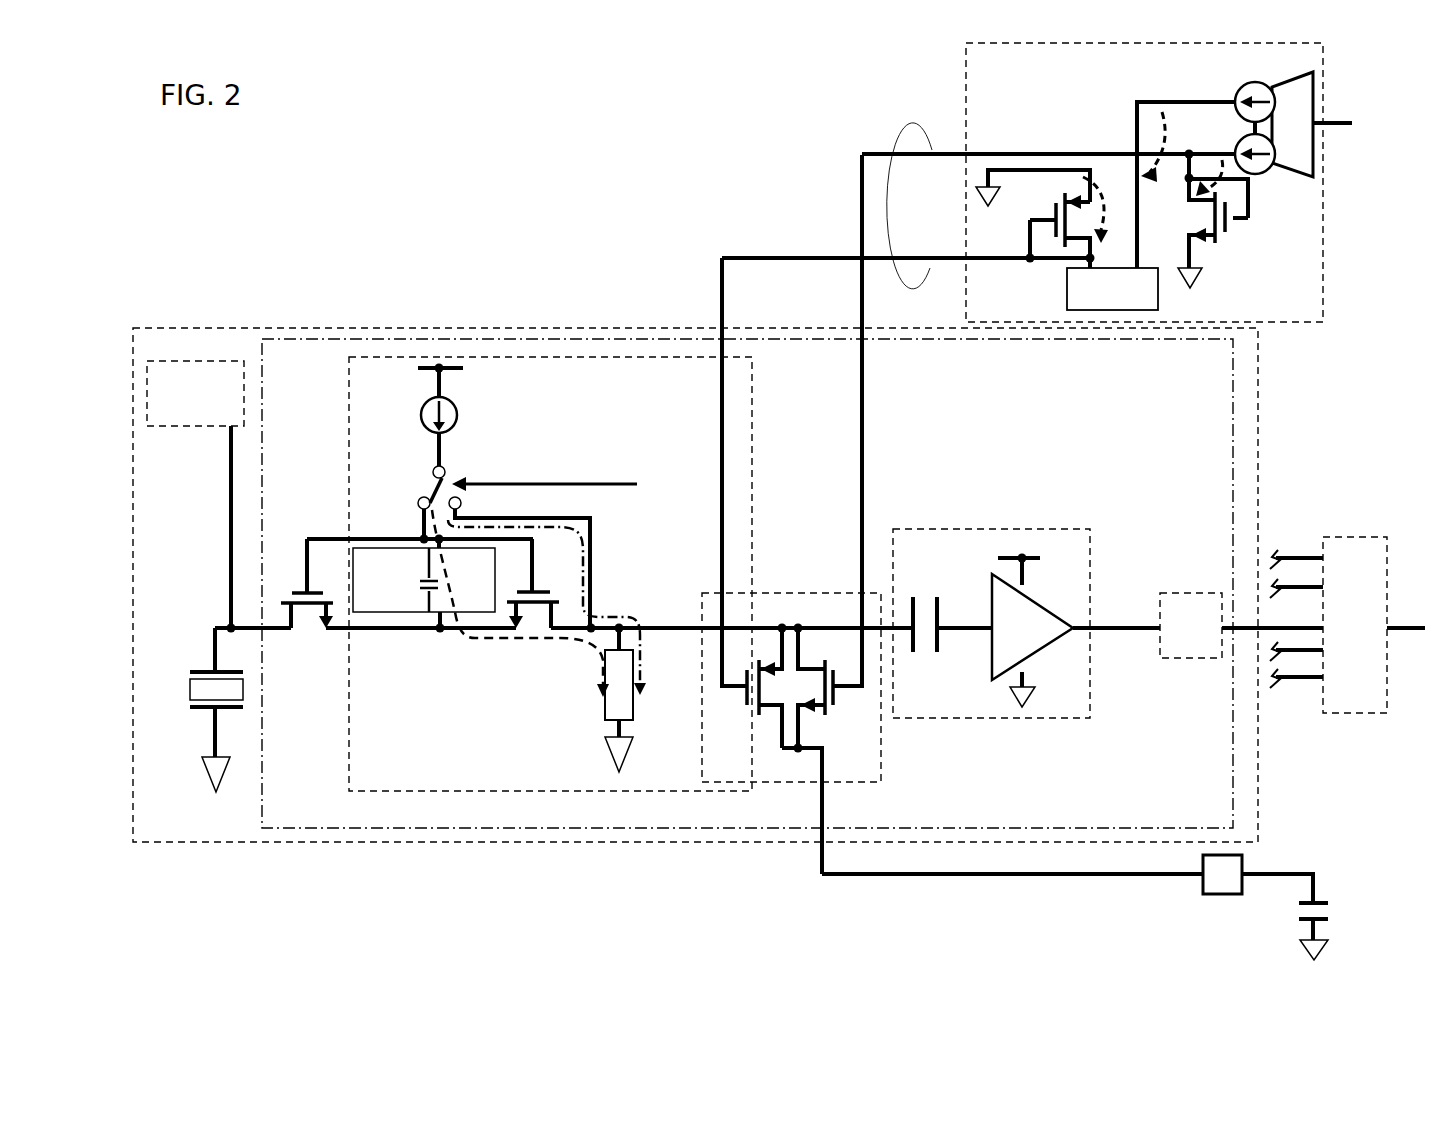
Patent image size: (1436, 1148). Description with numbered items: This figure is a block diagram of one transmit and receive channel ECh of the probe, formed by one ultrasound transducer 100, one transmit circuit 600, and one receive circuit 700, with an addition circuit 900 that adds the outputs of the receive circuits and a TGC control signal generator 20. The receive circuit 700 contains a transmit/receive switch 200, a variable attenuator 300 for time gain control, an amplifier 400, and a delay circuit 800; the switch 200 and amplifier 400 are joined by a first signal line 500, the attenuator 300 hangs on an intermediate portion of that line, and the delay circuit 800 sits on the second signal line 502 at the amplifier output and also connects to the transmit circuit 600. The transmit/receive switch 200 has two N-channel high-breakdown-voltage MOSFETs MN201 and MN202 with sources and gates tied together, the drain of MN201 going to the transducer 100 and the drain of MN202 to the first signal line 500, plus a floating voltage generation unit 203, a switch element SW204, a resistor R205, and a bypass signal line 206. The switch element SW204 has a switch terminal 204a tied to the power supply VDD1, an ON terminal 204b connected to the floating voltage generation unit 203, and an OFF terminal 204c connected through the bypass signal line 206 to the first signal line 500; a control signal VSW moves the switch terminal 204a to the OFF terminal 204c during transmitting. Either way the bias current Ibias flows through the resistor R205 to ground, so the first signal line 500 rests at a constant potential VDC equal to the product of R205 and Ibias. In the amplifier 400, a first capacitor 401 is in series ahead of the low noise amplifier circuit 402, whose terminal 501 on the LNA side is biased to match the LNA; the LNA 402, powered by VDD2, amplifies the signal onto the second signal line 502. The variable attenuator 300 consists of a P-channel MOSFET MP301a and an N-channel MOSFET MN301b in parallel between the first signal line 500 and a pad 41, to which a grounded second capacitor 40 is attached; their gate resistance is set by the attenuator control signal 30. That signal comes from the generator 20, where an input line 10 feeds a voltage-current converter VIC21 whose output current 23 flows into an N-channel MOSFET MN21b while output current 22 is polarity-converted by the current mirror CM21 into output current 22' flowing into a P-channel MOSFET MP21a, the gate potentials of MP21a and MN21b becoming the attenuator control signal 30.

The TGC control signal output 10 is at (1335, 113).
The TGC control signal generator 20 is at (1148, 220).
The output current 22 is at (1169, 161).
The output current 22' is at (1078, 169).
The output current 23 is at (1205, 150).
The attenuator control signal 30 is at (885, 138).
The second capacitor 40 is at (1333, 903).
The pad 41 is at (1225, 865).
The ultrasound transducer 100 is at (207, 657).
The transmit/receive switch 200 is at (403, 357).
The floating voltage generation unit 203 is at (398, 607).
The switch terminal 204a is at (426, 477).
The ON terminal 204b is at (418, 501).
The OFF terminal 204c is at (462, 503).
The bypass signal line 206 is at (603, 537).
The variable attenuator 300 is at (861, 514).
The amplifier 400 is at (1036, 653).
The first capacitor 401 is at (927, 596).
The low noise amplifier circuit 402 is at (1040, 608).
The first signal line 500 is at (685, 625).
The terminal 501 is at (960, 633).
The second signal line 502 is at (1110, 618).
The transmit circuit 600 is at (217, 362).
The receive circuit 700 is at (690, 339).
The delay circuit 800 is at (1186, 593).
The addition circuit 900 is at (1362, 560).
The switch element SW204 is at (467, 532).
The transmit/receive switch high-breakdown-voltage N-channel MOSFET MN201 is at (307, 618).
The transmit/receive switch high-breakdown-voltage N-channel MOSFET MN202 is at (535, 612).
The resistor R205 is at (604, 712).
The P-channel MOSFET MP301a is at (738, 703).
The N-channel MOSFET MN301b is at (838, 706).
The P-channel MOSFET MP21a is at (1049, 211).
The N-channel MOSFET MN21b is at (1233, 228).
The voltage-current converter VIC21 is at (1297, 173).
The current mirror CM21 is at (1112, 284).
The transmit and receive channel ECh is at (193, 328).
The power supply VDD1 is at (465, 379).
The power supply VDD2 is at (1022, 547).
The control signal VSW is at (544, 477).
The potential of the first signal line VDC is at (654, 610).
The bias current Ibias is at (462, 431).